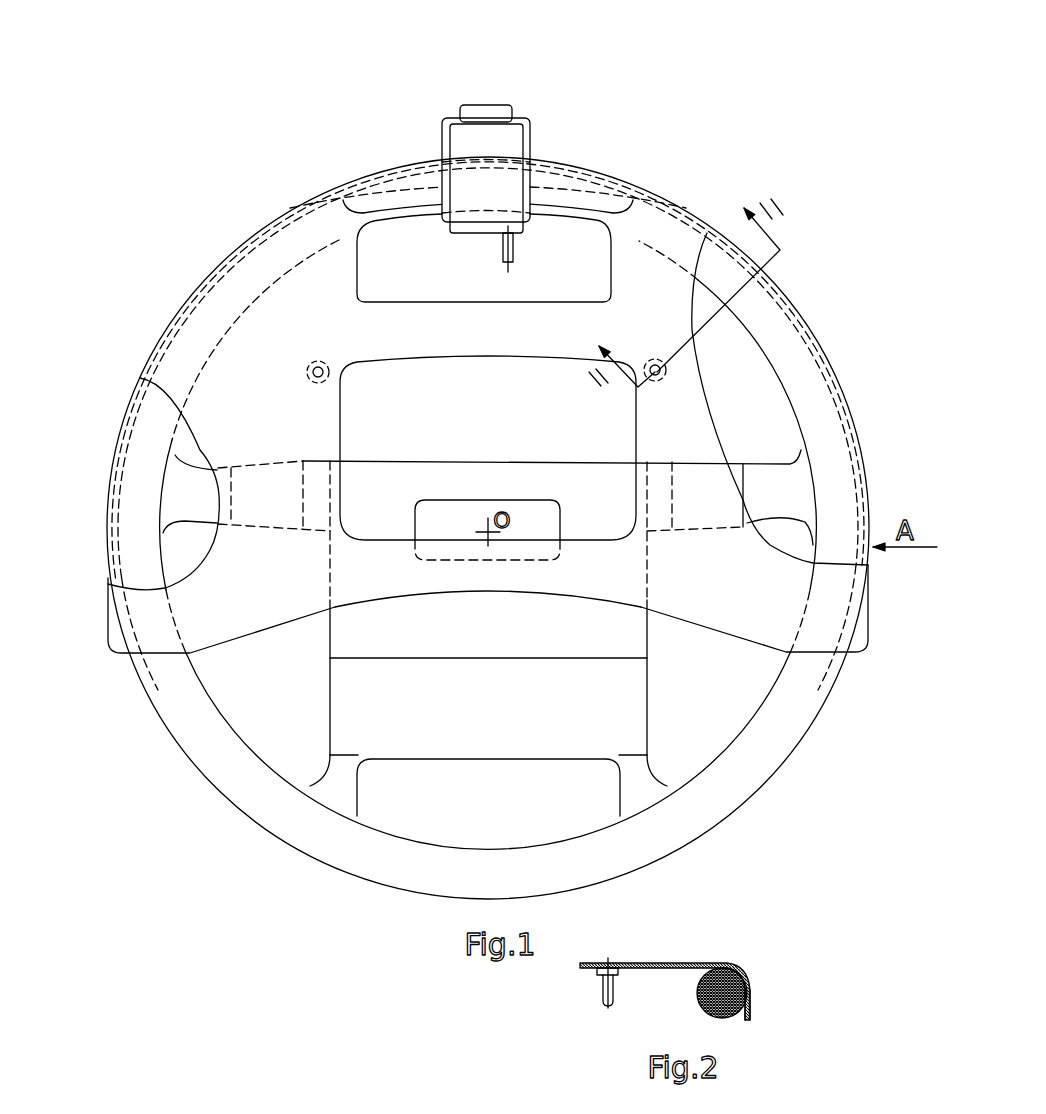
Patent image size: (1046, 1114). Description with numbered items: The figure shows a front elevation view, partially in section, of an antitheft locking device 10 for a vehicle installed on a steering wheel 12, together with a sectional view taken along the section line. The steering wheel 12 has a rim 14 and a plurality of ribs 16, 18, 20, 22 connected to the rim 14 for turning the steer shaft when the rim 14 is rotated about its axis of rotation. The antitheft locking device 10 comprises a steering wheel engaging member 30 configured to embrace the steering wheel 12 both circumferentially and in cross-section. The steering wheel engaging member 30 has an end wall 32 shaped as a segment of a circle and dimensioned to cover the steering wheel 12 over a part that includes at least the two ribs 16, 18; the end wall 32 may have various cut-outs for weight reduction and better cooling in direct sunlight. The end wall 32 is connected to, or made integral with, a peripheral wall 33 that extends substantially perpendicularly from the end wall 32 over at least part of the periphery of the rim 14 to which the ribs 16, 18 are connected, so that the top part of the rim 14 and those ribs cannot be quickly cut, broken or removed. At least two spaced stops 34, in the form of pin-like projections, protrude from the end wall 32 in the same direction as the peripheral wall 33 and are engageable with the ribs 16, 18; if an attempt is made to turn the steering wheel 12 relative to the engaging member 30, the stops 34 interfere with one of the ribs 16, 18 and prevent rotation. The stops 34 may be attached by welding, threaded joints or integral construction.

In FIG. 1, the antitheft locking device 10 is at (524, 150).
In FIG. 1, the steering wheel 12 is at (781, 766).
In FIG. 1, the rim 14 is at (150, 430).
In FIG. 2, the rim 14 is at (732, 1015).
In FIG. 1, the rib 16 is at (177, 502).
In FIG. 1, the rib 18 is at (790, 492).
In FIG. 1, the rib 20 is at (327, 797).
In FIG. 1, the rib 22 is at (637, 780).
In FIG. 1, the steering wheel engaging member 30 is at (686, 200).
In FIG. 1, the end wall 32 is at (464, 340).
In FIG. 2, the end wall 32 is at (647, 963).
In FIG. 2, the peripheral wall 33 is at (753, 993).
In FIG. 1, the stops 34 is at (316, 367).
In FIG. 2, the stops 34 is at (602, 996).